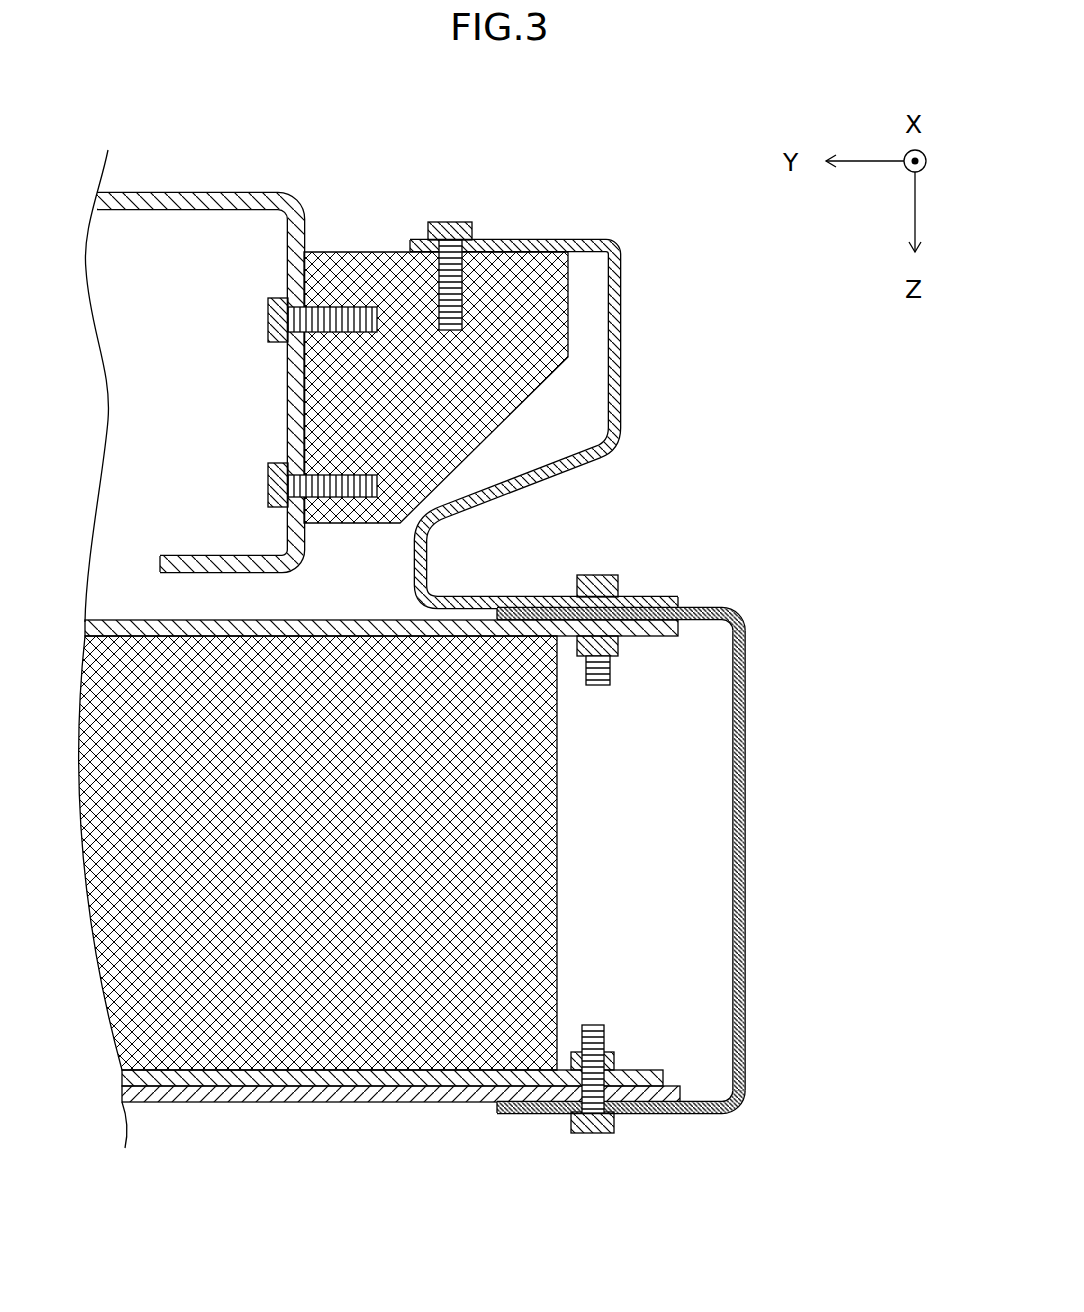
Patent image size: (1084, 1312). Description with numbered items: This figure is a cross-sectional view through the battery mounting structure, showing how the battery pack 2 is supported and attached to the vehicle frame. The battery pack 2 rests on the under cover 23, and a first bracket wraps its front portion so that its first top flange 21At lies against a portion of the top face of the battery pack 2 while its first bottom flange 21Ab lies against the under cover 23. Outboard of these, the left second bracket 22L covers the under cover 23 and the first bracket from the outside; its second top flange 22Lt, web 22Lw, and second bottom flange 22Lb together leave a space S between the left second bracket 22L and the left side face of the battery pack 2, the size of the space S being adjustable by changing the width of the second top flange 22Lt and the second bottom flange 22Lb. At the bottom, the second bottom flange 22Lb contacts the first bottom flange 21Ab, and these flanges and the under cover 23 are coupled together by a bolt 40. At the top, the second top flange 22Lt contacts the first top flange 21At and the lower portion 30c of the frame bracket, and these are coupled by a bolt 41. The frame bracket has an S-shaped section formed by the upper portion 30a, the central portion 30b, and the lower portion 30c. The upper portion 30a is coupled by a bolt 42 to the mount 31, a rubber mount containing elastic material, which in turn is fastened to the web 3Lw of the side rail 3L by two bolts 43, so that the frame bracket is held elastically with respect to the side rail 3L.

The side rail 3L is at (218, 370).
The web 3Lw is at (305, 245).
The mount 31 is at (375, 252).
The bolt 42 is at (450, 222).
The bolt 43 is at (268, 320).
The upper portion 30a is at (548, 240).
The central portion 30b is at (616, 444).
The lower portion 30c is at (535, 597).
The bolt 41 is at (600, 575).
The bolt 40 is at (594, 1133).
The battery pack 2 is at (442, 872).
The first top flange 21At is at (350, 620).
The first bottom flange 21Ab is at (355, 1102).
The left second bracket 22L is at (681, 859).
The second top flange 22Lt is at (700, 608).
The web 22Lw is at (745, 862).
The second bottom flange 22Lb is at (683, 1113).
The under cover 23 is at (635, 1080).
The space S is at (655, 842).